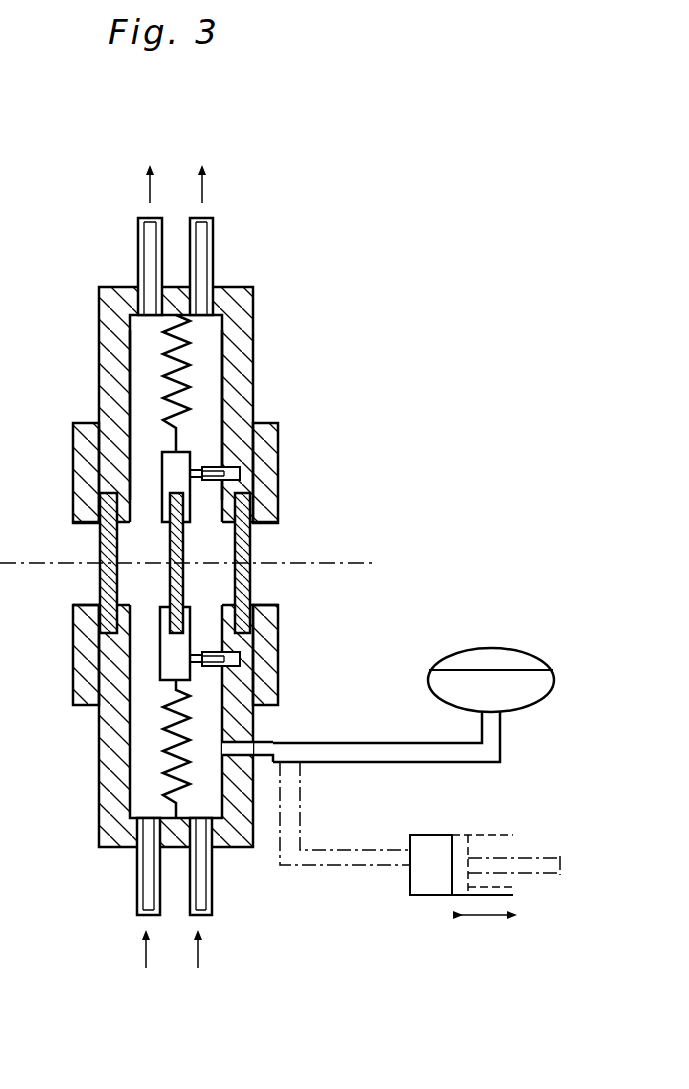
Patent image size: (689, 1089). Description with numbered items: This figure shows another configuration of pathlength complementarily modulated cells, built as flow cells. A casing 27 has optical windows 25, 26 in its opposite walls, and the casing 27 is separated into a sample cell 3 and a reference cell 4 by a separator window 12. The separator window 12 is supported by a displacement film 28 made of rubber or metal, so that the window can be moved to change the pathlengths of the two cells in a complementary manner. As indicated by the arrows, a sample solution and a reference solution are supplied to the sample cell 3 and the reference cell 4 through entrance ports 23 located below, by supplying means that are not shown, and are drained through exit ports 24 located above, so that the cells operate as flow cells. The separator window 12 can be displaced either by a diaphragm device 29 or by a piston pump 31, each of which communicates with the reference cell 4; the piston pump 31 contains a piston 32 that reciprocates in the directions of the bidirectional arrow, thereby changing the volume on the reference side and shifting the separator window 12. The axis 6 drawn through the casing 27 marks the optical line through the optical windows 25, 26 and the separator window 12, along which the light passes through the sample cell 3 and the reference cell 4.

The sample cell 3 is at (153, 416).
The reference cell 4 is at (210, 416).
The axis 6 is at (345, 565).
The separator window 12 is at (236, 553).
The entrance ports 23 is at (137, 890).
The exit ports 24 is at (140, 245).
The optical window 25 is at (100, 562).
The optical window 26 is at (252, 585).
The casing 27 is at (252, 350).
The displacement film 28 is at (165, 352).
The diaphragm device 29 is at (540, 690).
The piston pump 31 is at (437, 896).
The piston 32 is at (530, 892).